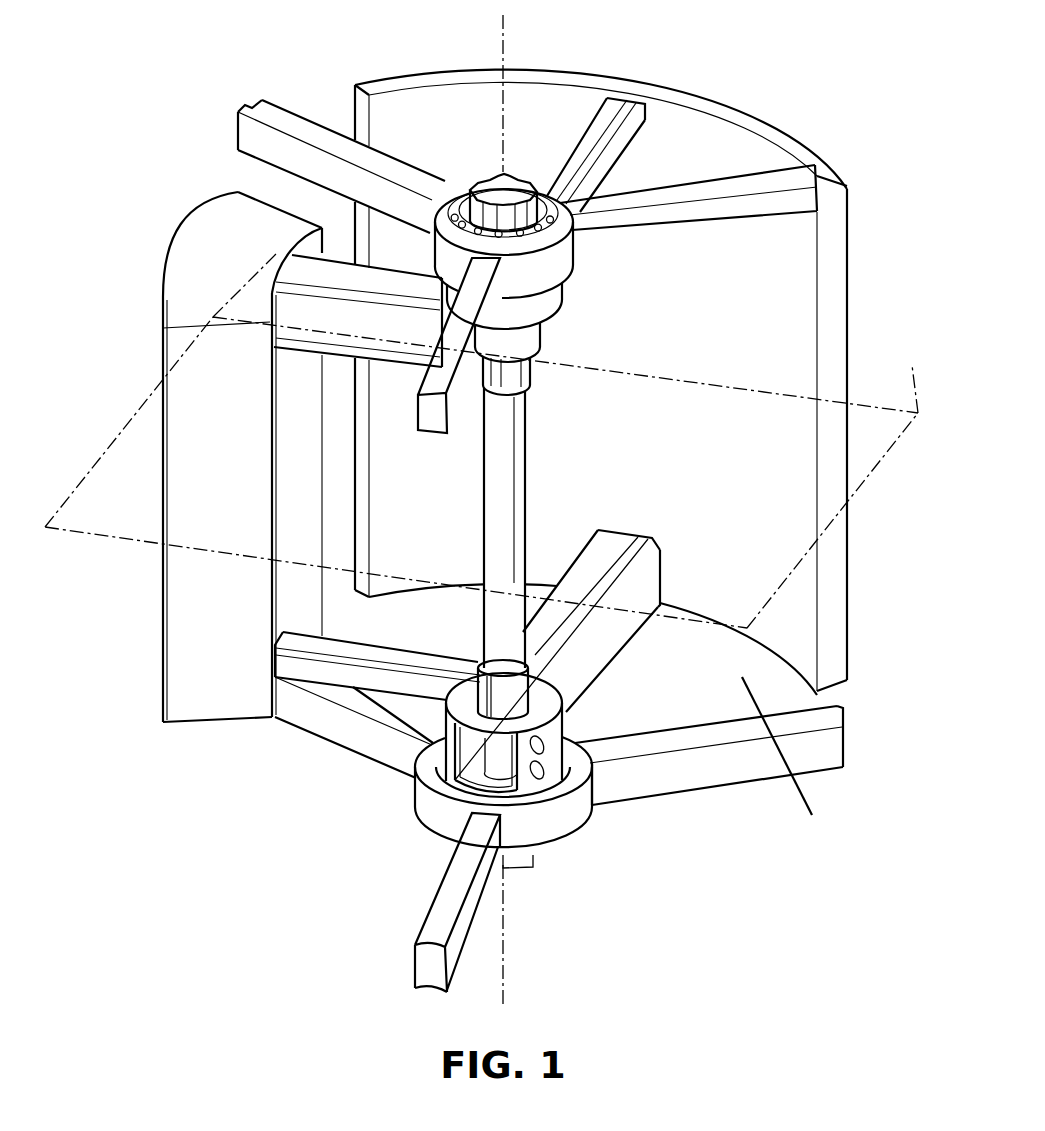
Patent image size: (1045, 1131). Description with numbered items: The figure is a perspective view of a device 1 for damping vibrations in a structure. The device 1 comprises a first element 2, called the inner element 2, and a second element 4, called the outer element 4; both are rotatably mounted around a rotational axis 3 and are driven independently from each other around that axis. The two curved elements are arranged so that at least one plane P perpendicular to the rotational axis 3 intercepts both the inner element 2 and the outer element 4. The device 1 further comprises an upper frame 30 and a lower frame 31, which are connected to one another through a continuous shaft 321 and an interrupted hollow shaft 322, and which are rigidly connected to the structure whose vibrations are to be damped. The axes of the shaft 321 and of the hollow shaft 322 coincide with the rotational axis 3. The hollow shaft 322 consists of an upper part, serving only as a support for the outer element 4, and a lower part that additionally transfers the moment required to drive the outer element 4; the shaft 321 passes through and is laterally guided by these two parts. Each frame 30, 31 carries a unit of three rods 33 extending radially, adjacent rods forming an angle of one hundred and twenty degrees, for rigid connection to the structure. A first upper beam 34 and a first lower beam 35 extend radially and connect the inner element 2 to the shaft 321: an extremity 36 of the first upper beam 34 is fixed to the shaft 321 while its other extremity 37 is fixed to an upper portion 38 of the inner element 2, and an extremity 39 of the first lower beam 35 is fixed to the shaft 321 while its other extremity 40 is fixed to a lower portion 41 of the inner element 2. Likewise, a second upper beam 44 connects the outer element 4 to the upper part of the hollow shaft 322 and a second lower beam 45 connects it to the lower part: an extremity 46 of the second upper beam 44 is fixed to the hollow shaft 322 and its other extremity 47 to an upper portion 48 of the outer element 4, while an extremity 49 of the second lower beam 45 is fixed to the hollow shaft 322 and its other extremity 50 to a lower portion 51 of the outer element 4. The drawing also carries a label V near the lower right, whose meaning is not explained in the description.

The device for damping vibrations 1 is at (872, 112).
The first element (inner element) 2 is at (187, 665).
The rotational axis 3 is at (504, 968).
The second element (outer element) 4 is at (833, 623).
The upper frame 30 is at (740, 200).
The lower frame 31 is at (692, 760).
The rods 33 is at (302, 127).
The first upper beam 34 is at (313, 315).
The first lower beam 35 is at (372, 677).
The extremity of the first upper beam 36 is at (433, 288).
The extremity of the first upper beam 37 is at (278, 258).
The upper portion of the inner element 38 is at (210, 320).
The extremity of the first lower beam 39 is at (473, 648).
The extremity of the first lower beam 40 is at (275, 672).
The lower portion of the inner element 41 is at (273, 652).
The second upper beam 44 is at (638, 127).
The second lower beam 45 is at (602, 647).
The extremity of the second upper beam 46 is at (557, 193).
The extremity of the second upper beam 47 is at (620, 108).
The upper portion of the outer element 48 is at (645, 132).
The extremity of the second lower beam 49 is at (565, 720).
The extremity of the second lower beam 50 is at (650, 582).
The lower portion of the outer element 51 is at (660, 572).
The continuous shaft 321 is at (502, 410).
The interrupted hollow shaft 322 is at (530, 785).
The plane P is at (487, 472).
The wind direction V is at (784, 760).